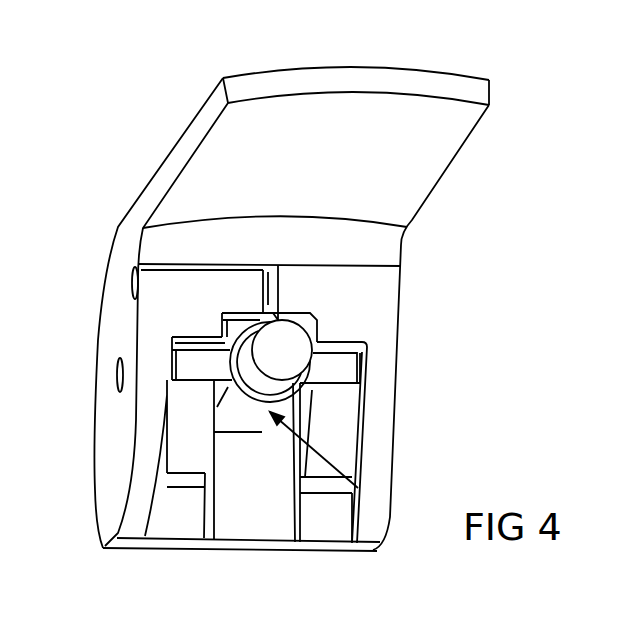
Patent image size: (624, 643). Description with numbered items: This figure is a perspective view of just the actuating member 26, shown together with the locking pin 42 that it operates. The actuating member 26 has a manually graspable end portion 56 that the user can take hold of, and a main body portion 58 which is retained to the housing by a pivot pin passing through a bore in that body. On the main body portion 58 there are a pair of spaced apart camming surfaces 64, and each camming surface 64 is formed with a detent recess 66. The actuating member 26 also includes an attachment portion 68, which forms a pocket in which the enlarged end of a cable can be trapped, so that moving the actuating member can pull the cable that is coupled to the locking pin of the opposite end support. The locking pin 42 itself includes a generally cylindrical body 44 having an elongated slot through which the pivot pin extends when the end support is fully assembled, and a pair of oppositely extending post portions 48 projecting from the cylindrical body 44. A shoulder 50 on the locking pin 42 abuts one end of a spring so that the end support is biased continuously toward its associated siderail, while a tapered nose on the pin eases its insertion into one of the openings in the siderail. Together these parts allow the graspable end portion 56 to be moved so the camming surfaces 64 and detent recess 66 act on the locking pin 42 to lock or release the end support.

The actuating member 26 is at (207, 96).
The locking pin 42 is at (318, 487).
The cylindrical body 44 is at (235, 413).
The post portions 48 is at (185, 362).
The shoulder 50 is at (302, 388).
The manually graspable end portion 56 is at (480, 83).
The main body portion 58 is at (413, 311).
The camming surfaces 64 is at (178, 443).
The detent recess 66 is at (182, 482).
The attachment portion 68 is at (131, 283).